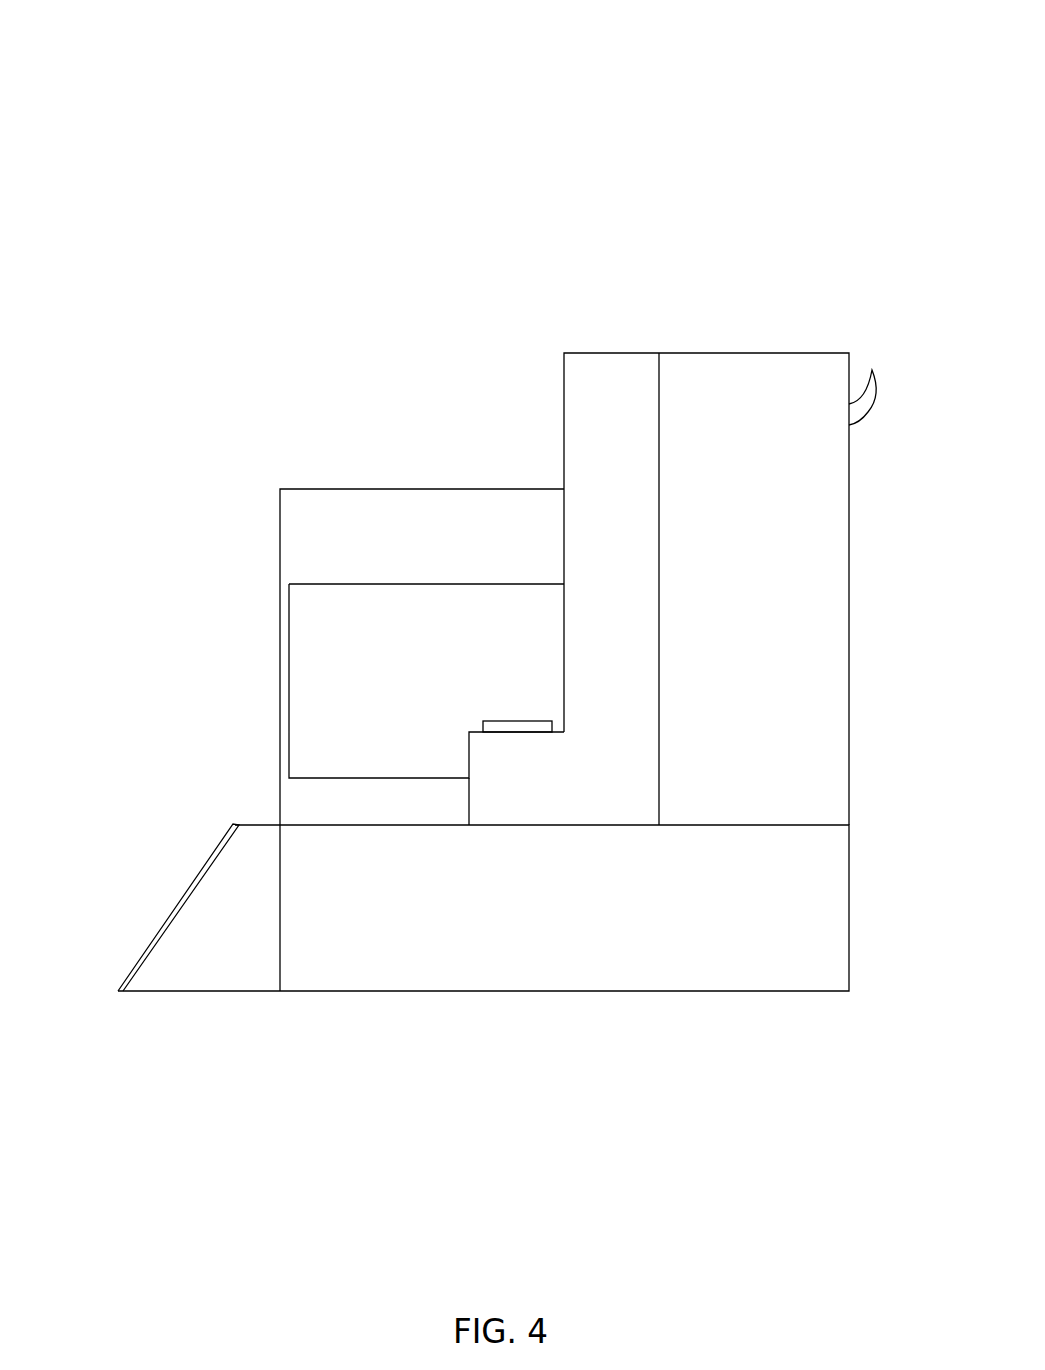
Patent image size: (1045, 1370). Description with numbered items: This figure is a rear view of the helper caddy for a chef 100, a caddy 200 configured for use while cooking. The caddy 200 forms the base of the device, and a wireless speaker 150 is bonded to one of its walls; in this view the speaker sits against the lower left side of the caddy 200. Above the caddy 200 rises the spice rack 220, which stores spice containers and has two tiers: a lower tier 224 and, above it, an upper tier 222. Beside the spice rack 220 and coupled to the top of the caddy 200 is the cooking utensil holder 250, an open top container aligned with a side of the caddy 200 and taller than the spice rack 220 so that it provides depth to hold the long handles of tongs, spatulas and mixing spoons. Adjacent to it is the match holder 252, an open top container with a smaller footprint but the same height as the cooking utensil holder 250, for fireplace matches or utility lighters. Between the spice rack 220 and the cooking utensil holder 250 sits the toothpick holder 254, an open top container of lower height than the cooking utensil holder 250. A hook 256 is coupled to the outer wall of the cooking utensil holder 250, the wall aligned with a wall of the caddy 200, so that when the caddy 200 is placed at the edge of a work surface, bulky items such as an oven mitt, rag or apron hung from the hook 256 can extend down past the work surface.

The helper caddy for a chef 100 is at (118, 176).
The wireless speaker 150 is at (196, 912).
The caddy 200 is at (298, 839).
The spice rack 220 is at (280, 508).
The upper tier 222 is at (409, 512).
The lower tier 224 is at (298, 800).
The cooking utensil holder 250 is at (758, 372).
The match holder 252 is at (587, 380).
The toothpick holder 254 is at (508, 721).
The hook 256 is at (861, 411).